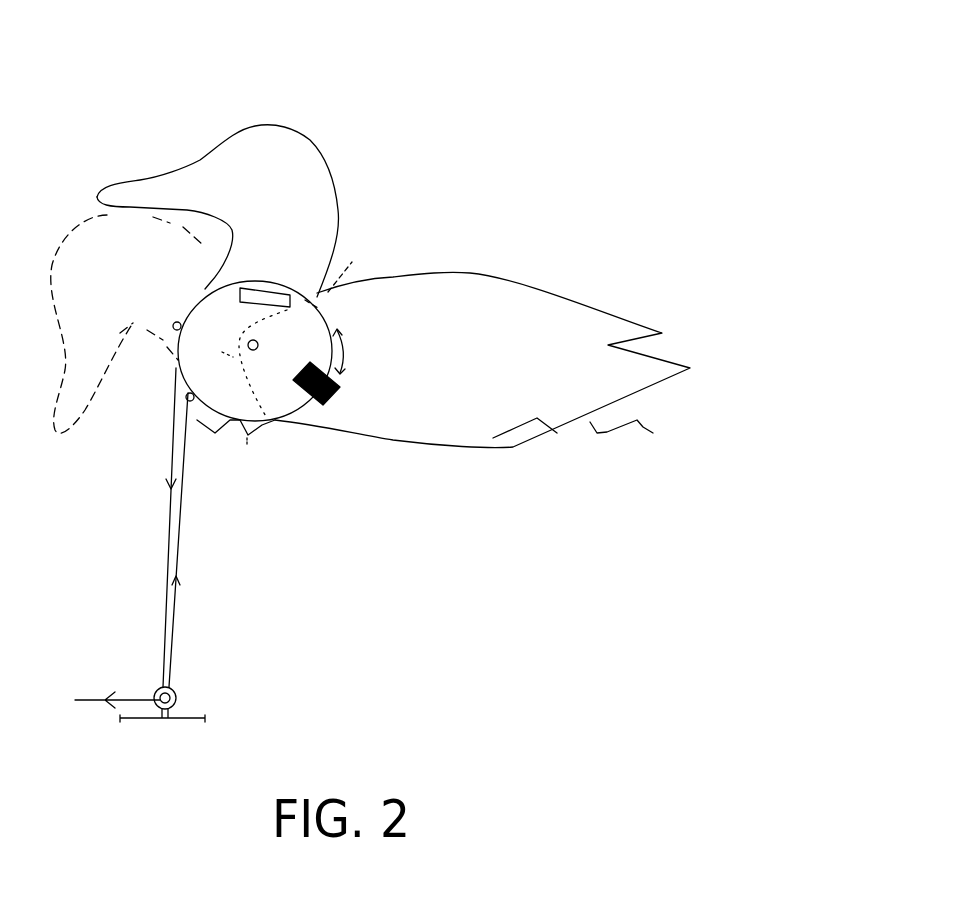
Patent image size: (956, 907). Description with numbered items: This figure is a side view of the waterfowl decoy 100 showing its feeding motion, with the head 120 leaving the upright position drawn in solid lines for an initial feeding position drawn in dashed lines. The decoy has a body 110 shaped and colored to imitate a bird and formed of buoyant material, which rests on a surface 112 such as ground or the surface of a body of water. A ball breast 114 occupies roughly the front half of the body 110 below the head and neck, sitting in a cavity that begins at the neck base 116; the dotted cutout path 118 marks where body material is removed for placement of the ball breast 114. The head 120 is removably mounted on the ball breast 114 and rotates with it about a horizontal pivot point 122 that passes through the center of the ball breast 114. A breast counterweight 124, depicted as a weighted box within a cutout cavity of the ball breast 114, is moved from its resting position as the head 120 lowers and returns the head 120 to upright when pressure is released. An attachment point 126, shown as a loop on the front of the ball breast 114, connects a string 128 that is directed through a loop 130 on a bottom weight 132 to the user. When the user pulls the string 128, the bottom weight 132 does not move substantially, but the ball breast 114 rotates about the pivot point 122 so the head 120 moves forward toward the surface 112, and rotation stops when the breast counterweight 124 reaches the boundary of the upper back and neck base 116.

The waterfowl decoy 100 is at (460, 122).
The body 110 is at (510, 307).
The surface 112 is at (197, 420).
The ball breast 114 is at (440, 451).
The neck base 116 is at (320, 290).
The cutout path 118 is at (237, 364).
The head 120 is at (265, 158).
The horizontal pivot point 122 is at (259, 343).
The breast counterweight 124 is at (312, 405).
The attachment point 126 is at (173, 330).
The string 128 is at (168, 552).
The loop 130 is at (163, 683).
The bottom weight 132 is at (188, 717).